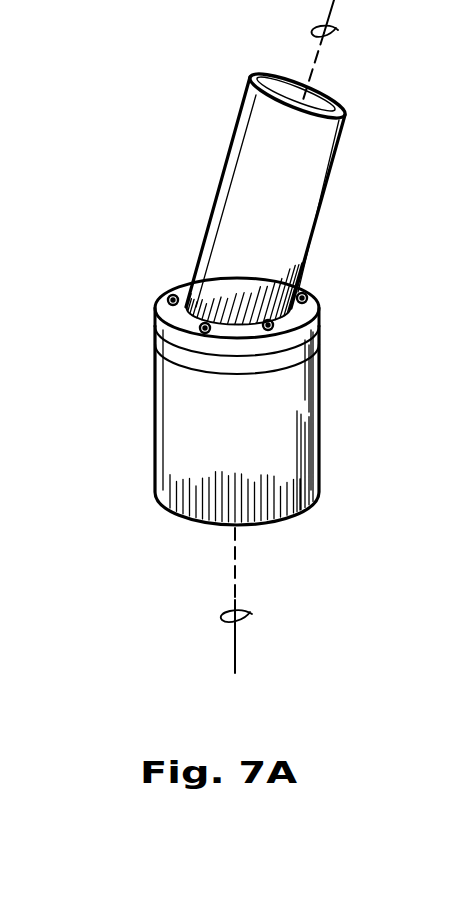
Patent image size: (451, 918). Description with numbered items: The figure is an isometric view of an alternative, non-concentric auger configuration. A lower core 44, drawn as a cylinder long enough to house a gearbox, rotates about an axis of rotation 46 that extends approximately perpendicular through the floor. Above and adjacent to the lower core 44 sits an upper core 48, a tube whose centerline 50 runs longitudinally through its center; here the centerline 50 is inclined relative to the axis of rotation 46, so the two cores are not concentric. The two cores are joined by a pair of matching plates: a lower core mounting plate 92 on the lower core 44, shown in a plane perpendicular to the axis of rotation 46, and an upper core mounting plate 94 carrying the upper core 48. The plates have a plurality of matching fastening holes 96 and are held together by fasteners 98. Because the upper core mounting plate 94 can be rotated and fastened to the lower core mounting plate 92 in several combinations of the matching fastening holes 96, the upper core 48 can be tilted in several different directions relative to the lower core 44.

The centerline 50 is at (338, 30).
The upper core 48 is at (293, 182).
The upper core mounting plate 94 is at (313, 323).
The matching fastening holes 96 is at (160, 353).
The lower core mounting plate 92 is at (313, 355).
The fasteners 98 is at (166, 292).
The lower core 44 is at (258, 445).
The axis of rotation 46 is at (245, 618).